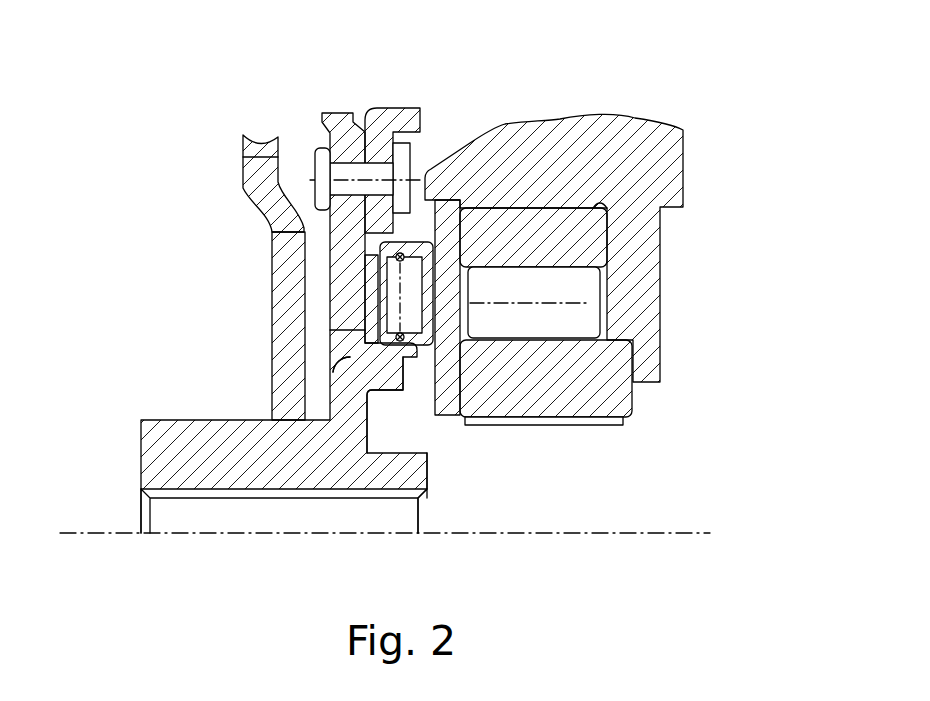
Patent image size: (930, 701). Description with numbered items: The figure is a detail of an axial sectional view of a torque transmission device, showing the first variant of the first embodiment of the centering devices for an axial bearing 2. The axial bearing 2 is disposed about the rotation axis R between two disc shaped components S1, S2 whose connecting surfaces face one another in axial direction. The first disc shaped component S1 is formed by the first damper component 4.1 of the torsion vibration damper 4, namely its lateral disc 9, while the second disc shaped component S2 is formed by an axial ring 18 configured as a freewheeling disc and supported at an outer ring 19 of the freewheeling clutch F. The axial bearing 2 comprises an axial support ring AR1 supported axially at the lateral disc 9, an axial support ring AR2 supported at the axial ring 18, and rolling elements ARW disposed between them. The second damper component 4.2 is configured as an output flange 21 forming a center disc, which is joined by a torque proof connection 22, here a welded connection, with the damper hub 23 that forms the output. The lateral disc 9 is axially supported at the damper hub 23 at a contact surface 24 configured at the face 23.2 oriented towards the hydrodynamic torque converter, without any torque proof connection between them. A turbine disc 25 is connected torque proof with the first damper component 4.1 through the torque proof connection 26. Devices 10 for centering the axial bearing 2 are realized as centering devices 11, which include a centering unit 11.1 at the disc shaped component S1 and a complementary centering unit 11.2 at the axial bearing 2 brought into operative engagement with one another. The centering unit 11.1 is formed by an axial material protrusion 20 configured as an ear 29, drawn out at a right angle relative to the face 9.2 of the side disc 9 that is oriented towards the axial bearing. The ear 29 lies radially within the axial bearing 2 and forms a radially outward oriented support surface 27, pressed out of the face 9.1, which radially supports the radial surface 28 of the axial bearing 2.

The axial bearing 2 is at (561, 258).
The torsion vibration damper 4 is at (231, 247).
The first damper component 4.1 is at (286, 131).
The second damper component 4.2 is at (284, 256).
The lateral disc 9 is at (340, 118).
The face of the side disc 9.1 is at (318, 147).
The face of the side disc oriented towards the axial bearing 9.2 is at (364, 128).
The devices for centering 10 is at (309, 356).
The centering devices 11 is at (431, 462).
The centering unit 11.1 is at (348, 397).
The second flange section 11.2 is at (468, 208).
The axial ring 18 is at (549, 174).
The outer ring 19 is at (607, 241).
The material protrusion 20 is at (352, 400).
The output flange 21 is at (273, 287).
The torque proof connection 22 is at (300, 337).
The damper hub 23 is at (163, 475).
The face of the damper hub 23.2 is at (430, 473).
The contact surface 24 is at (322, 405).
The turbine disc 25 is at (380, 117).
The torque proof connection 26 is at (401, 150).
The support surface 27 is at (338, 388).
The radial surface 28 is at (452, 350).
The ear 29 is at (306, 428).
The freewheeling clutch F is at (614, 174).
The rotation axis R is at (120, 535).
The first disc shaped component S1 is at (258, 202).
The second disc shaped component S2 is at (463, 267).
The axial support ring AR1 is at (443, 235).
The axial support ring AR2 is at (463, 310).
The rolling elements ARW is at (440, 235).